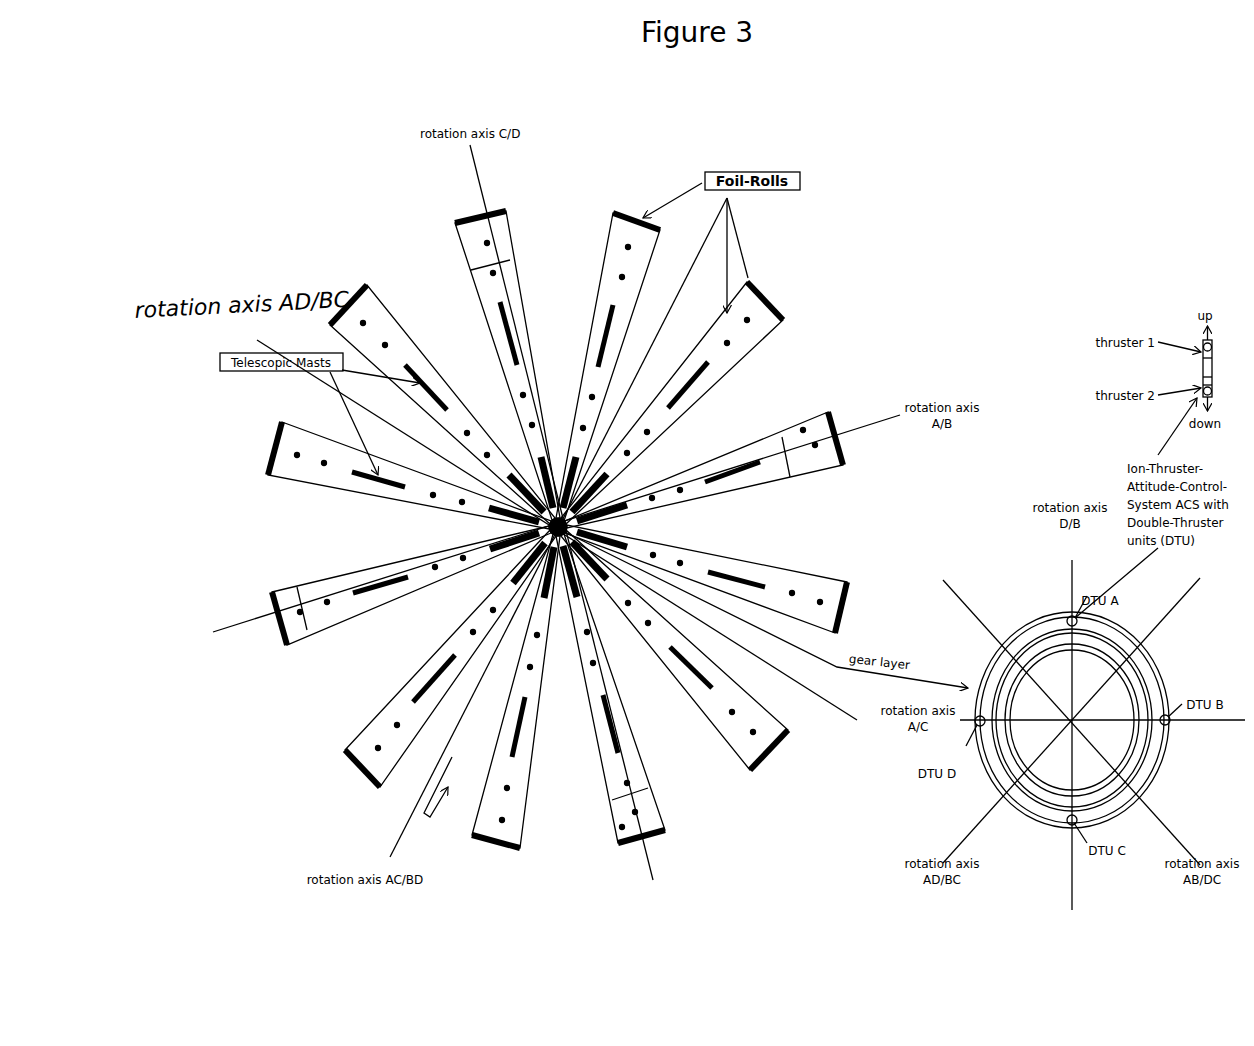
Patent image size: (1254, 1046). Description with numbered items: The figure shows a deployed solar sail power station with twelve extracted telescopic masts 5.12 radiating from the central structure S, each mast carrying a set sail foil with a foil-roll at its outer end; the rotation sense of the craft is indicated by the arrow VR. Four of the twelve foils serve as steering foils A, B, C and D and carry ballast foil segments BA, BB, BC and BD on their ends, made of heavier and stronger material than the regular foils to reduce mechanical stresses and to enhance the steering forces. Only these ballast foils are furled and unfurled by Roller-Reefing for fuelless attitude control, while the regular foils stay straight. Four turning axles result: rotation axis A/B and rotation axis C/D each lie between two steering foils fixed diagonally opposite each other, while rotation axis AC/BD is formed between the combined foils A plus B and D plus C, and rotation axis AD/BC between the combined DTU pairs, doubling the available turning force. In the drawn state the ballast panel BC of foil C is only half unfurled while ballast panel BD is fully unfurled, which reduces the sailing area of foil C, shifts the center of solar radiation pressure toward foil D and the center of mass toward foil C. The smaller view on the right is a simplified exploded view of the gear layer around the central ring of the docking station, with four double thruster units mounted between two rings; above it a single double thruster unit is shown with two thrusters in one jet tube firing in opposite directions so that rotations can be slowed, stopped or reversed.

The steering foil A is at (472, 365).
The steering foil B is at (617, 688).
The steering foil C is at (411, 607).
The steering foil D is at (706, 462).
The ballast foil segment BA is at (466, 240).
The ballast foil segment BB is at (622, 827).
The ballast foil segment BC is at (295, 627).
The ballast foil segment BD is at (799, 426).
The central satellite hub S is at (570, 528).
The rotation direction VR is at (447, 779).
The telescopic mast 5.12 is at (710, 362).